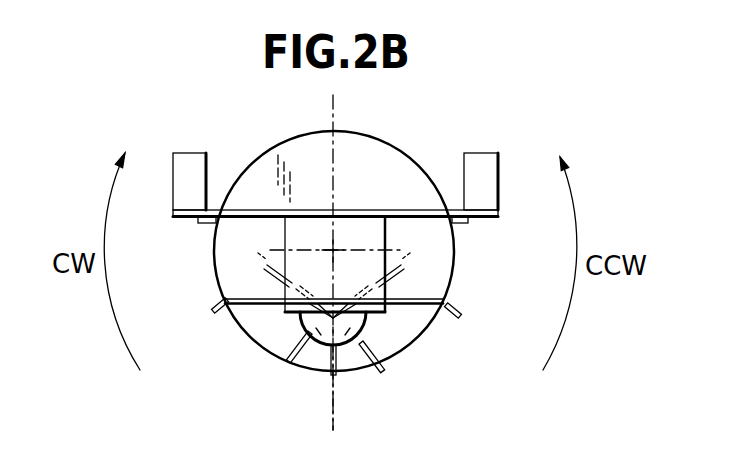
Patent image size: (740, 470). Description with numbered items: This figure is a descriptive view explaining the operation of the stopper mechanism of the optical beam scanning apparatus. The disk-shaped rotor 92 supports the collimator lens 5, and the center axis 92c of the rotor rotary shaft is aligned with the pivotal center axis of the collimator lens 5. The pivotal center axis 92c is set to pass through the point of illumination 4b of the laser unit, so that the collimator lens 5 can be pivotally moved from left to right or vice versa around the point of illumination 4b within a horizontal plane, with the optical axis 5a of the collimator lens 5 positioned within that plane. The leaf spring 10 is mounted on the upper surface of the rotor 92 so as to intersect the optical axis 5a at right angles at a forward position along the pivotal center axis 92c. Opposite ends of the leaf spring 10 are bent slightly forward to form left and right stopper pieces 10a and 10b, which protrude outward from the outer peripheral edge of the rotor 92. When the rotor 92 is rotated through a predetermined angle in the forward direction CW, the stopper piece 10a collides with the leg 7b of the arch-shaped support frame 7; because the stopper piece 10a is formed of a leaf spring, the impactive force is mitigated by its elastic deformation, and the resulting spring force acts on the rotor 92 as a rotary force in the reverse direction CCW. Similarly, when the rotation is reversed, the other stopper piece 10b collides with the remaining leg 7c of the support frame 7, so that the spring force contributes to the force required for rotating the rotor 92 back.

The rotor 92 is at (403, 168).
The center axis 92c is at (333, 250).
The point of illumination 4b is at (333, 251).
The support frame 7 is at (498, 158).
The leg 7b is at (183, 222).
The leg 7c is at (488, 222).
The leaf spring 10 is at (252, 320).
The stopper piece 10a is at (213, 307).
The stopper piece 10b is at (452, 303).
The collimator lens 5 is at (340, 346).
The optical axis 5a is at (333, 412).